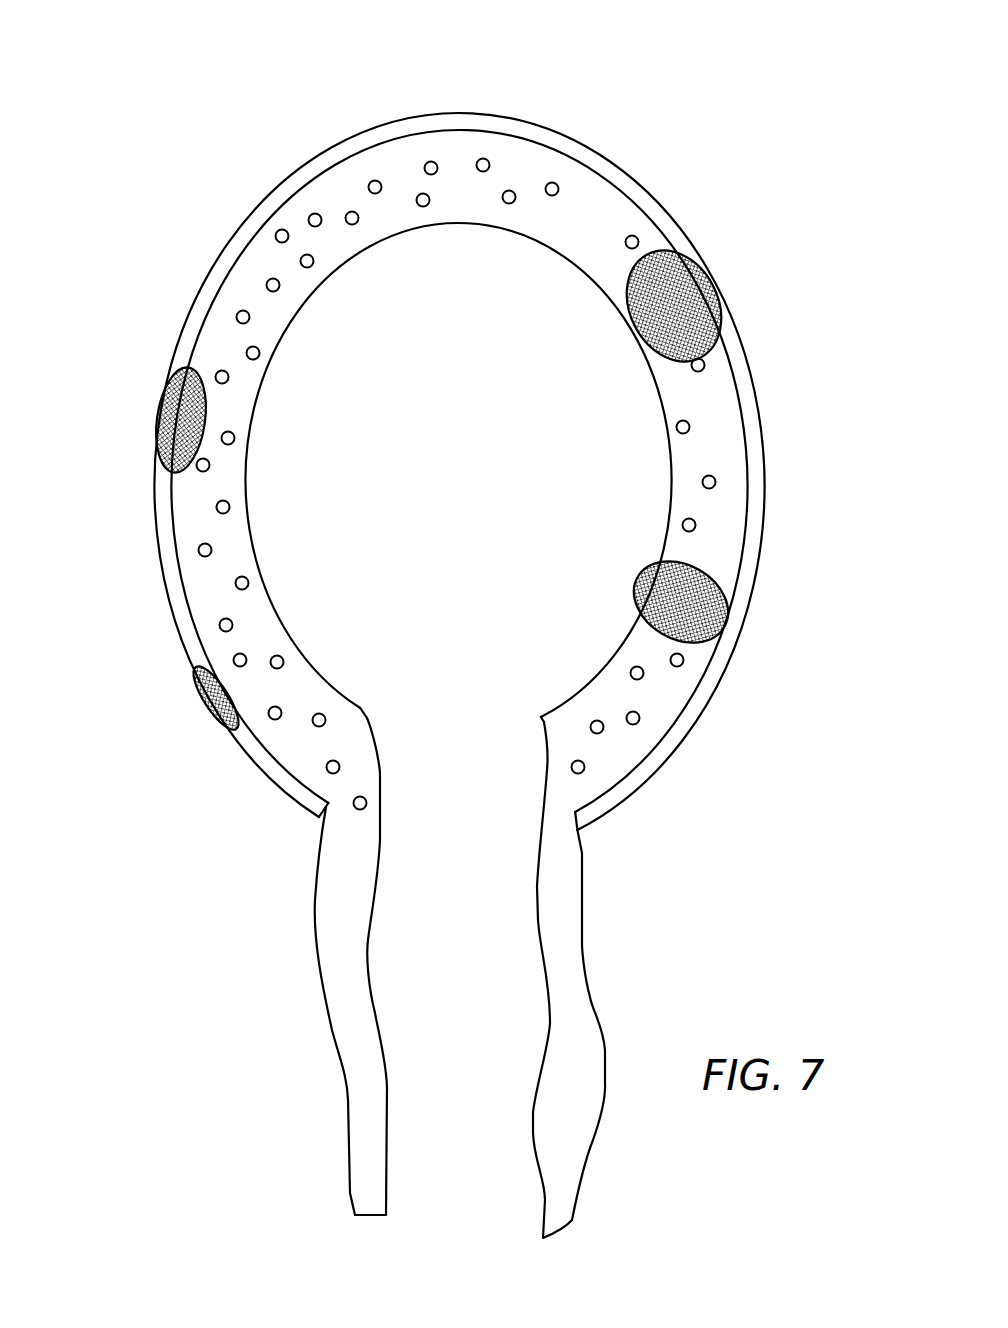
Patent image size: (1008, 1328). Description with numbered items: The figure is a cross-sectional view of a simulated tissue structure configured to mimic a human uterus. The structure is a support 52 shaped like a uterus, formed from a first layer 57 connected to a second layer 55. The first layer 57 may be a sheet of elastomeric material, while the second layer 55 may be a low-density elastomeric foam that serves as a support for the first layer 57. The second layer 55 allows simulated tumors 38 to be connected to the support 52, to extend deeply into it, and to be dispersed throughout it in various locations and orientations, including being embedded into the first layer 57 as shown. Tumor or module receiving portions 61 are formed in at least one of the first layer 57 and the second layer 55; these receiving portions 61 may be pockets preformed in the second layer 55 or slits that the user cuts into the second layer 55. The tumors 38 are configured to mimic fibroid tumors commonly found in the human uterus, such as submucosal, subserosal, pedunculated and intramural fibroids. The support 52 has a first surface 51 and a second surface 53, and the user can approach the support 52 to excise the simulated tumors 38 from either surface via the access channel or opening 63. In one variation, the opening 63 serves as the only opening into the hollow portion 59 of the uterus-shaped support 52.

The support 52 is at (286, 126).
The first surface 51 is at (663, 208).
The second surface 53 is at (550, 250).
The second layer 55 is at (583, 212).
The first layer 57 is at (247, 215).
The hollow portion 59 is at (413, 323).
The access channel or opening 63 is at (477, 948).
The tumors 38 is at (703, 286).
The tumor or module receiving portions 61 is at (712, 340).